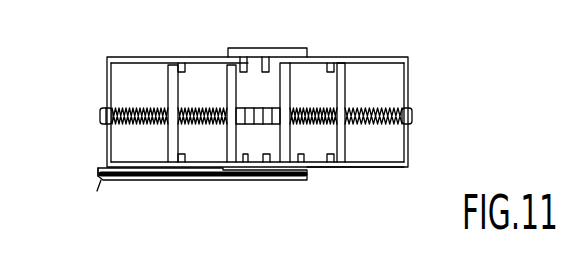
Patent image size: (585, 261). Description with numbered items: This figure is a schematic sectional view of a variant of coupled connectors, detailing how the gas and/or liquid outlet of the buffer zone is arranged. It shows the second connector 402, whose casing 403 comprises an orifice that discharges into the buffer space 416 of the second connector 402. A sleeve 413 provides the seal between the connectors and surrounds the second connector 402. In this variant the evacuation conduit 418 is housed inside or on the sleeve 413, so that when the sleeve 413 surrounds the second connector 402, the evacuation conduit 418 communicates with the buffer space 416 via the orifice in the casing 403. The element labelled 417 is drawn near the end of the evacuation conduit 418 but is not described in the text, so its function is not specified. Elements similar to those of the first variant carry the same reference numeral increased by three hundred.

The second connector 402 is at (136, 57).
The casing 403 is at (353, 172).
The sleeve 413 is at (266, 47).
The buffer space 416 is at (315, 82).
The plate end 417 is at (103, 170).
The evacuation conduit 418 is at (256, 182).